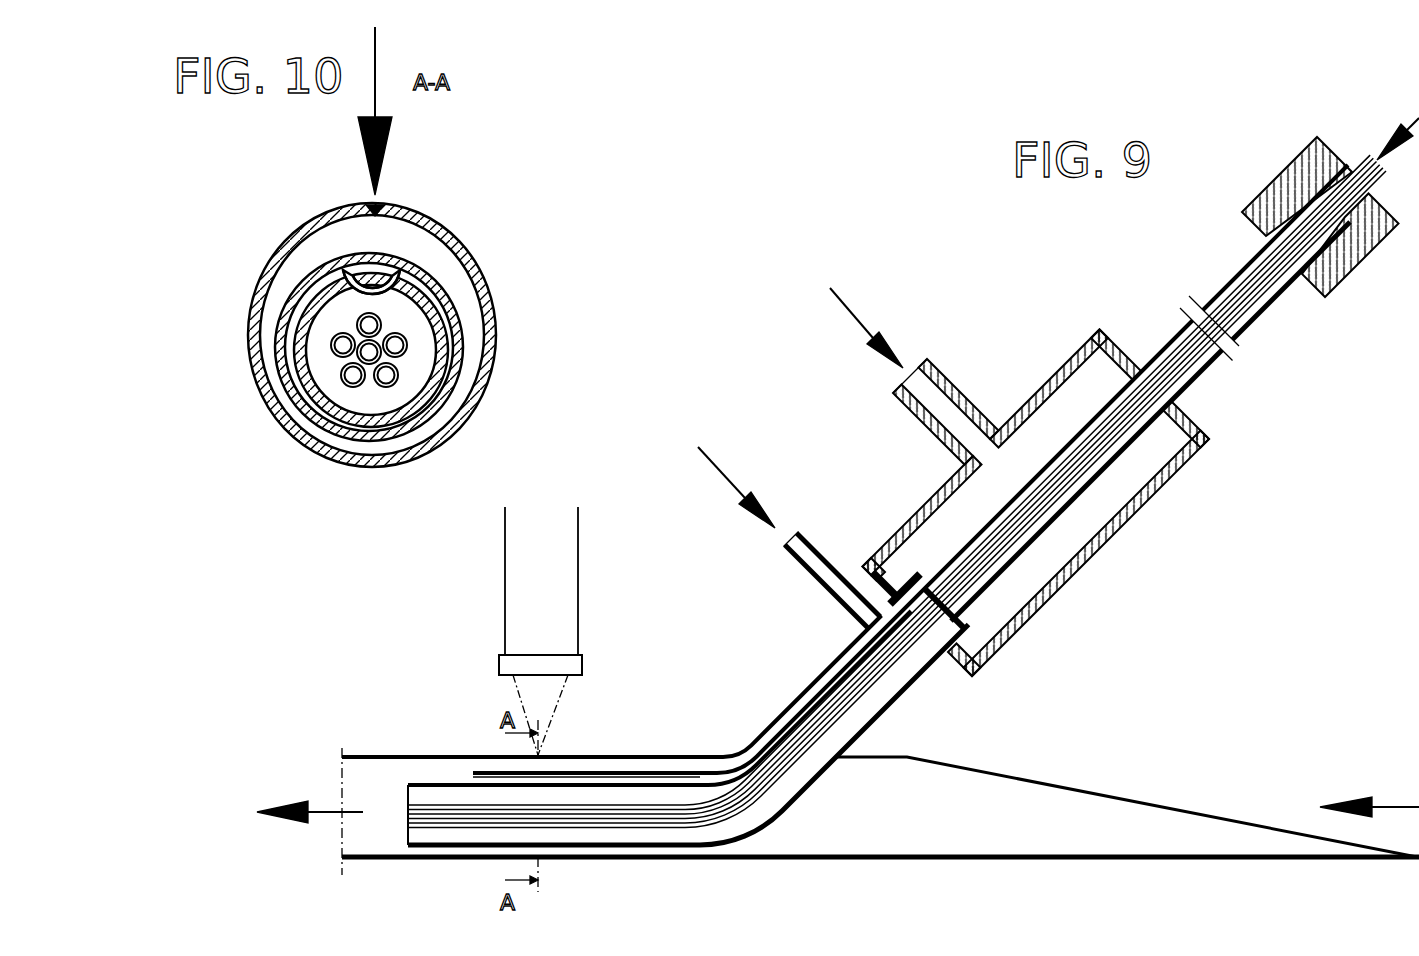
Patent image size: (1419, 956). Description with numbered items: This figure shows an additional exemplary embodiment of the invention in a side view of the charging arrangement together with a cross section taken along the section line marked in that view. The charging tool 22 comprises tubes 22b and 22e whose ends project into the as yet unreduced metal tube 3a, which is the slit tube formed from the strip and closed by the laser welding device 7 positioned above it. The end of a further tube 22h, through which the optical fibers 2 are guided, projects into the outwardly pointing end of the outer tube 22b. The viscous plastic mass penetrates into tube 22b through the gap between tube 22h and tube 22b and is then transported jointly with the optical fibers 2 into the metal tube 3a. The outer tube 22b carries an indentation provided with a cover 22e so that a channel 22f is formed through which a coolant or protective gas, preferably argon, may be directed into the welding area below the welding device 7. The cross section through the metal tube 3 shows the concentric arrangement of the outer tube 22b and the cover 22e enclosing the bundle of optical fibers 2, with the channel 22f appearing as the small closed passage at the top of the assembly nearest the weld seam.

In FIG. 10, the metal tube 3 is at (432, 226).
In FIG. 9, the as yet unreduced metal tube 3a is at (383, 753).
In FIG. 10, the optical fibers 2 is at (396, 343).
In FIG. 9, the optical fibers 2 is at (1373, 178).
In FIG. 9, the laser welding device 7 is at (570, 598).
In FIG. 9, the charging tool 22 is at (1040, 330).
In FIG. 10, the outer tube 22b is at (447, 375).
In FIG. 9, the outer tube 22b is at (830, 677).
In FIG. 10, the cover 22e is at (460, 338).
In FIG. 9, the cover 22e is at (657, 785).
In FIG. 10, the channel 22f is at (377, 275).
In FIG. 9, the channel 22f is at (608, 775).
In FIG. 9, the tube 22h is at (1207, 368).